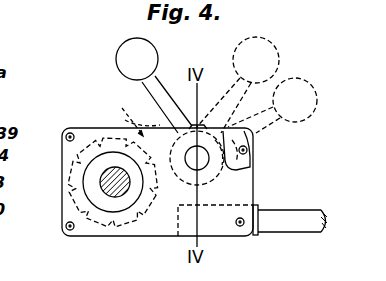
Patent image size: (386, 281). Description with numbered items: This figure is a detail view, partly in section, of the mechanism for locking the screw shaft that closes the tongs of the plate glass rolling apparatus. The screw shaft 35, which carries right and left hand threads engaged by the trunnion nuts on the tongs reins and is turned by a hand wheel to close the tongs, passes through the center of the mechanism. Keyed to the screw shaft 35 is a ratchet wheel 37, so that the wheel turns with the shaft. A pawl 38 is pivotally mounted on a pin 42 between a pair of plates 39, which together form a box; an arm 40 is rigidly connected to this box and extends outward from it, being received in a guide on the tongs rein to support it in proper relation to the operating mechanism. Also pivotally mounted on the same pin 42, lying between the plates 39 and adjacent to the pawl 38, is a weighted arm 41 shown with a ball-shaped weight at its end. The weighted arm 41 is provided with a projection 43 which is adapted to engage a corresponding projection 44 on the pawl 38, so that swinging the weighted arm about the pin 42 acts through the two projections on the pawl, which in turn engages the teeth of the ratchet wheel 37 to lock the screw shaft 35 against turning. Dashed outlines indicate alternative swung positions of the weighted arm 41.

The screw shaft 35 is at (100, 190).
The ratchet wheel 37 is at (78, 178).
The pawl 38 is at (147, 111).
The plates 39 is at (242, 181).
The arm 40 is at (321, 209).
The weighted arm 41 is at (150, 58).
The pin 42 is at (200, 163).
The projection 43 is at (197, 125).
The projection 44 is at (226, 166).